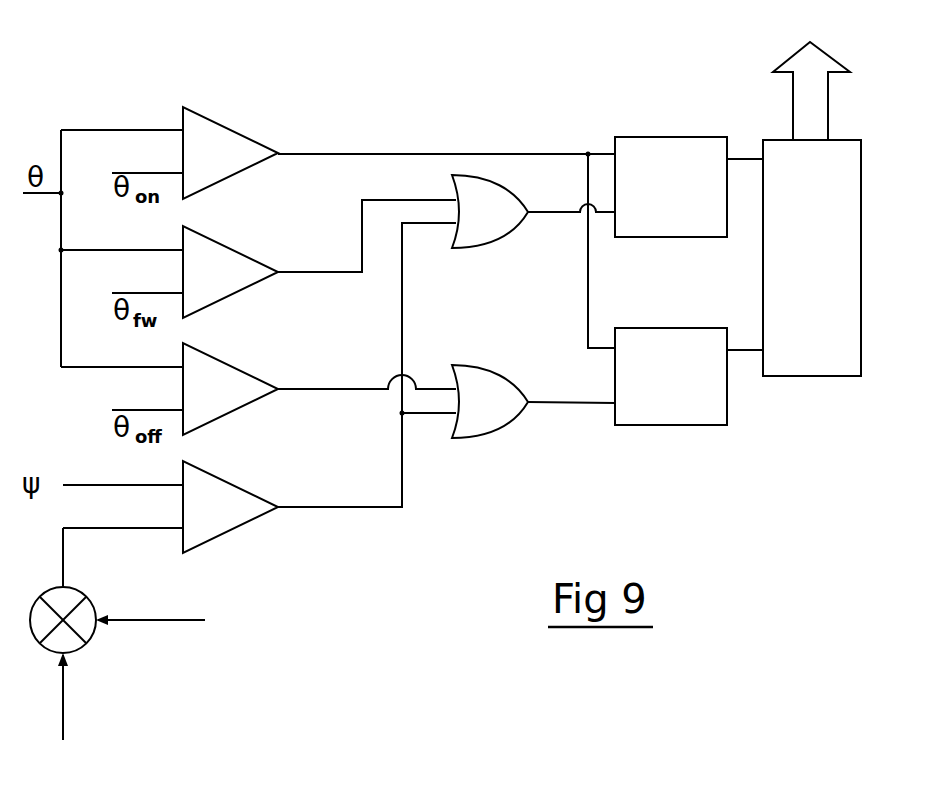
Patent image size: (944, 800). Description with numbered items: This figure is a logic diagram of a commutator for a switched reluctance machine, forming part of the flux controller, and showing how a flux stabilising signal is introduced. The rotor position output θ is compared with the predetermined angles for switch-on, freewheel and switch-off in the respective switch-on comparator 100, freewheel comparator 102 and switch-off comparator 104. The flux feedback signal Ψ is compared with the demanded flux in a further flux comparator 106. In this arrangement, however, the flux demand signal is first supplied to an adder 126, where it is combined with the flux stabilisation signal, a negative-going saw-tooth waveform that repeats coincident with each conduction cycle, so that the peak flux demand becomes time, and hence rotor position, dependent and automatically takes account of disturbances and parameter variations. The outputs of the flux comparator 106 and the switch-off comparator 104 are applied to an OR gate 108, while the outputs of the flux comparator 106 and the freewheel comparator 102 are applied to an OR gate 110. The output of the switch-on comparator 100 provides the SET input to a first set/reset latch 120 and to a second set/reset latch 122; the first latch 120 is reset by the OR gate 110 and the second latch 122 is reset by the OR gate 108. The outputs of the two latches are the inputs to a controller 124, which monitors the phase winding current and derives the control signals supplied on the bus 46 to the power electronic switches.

The switch-on comparator 100 is at (230, 142).
The freewheel comparator 102 is at (230, 262).
The switch-off comparator 104 is at (230, 382).
The flux comparator 106 is at (230, 502).
The OR gate 108 is at (490, 380).
The OR gate 110 is at (493, 198).
The first set/reset latch 120 is at (657, 137).
The second set/reset latch 122 is at (727, 417).
The controller 124 is at (827, 376).
The bus 46 is at (792, 83).
The adder 126 is at (75, 595).